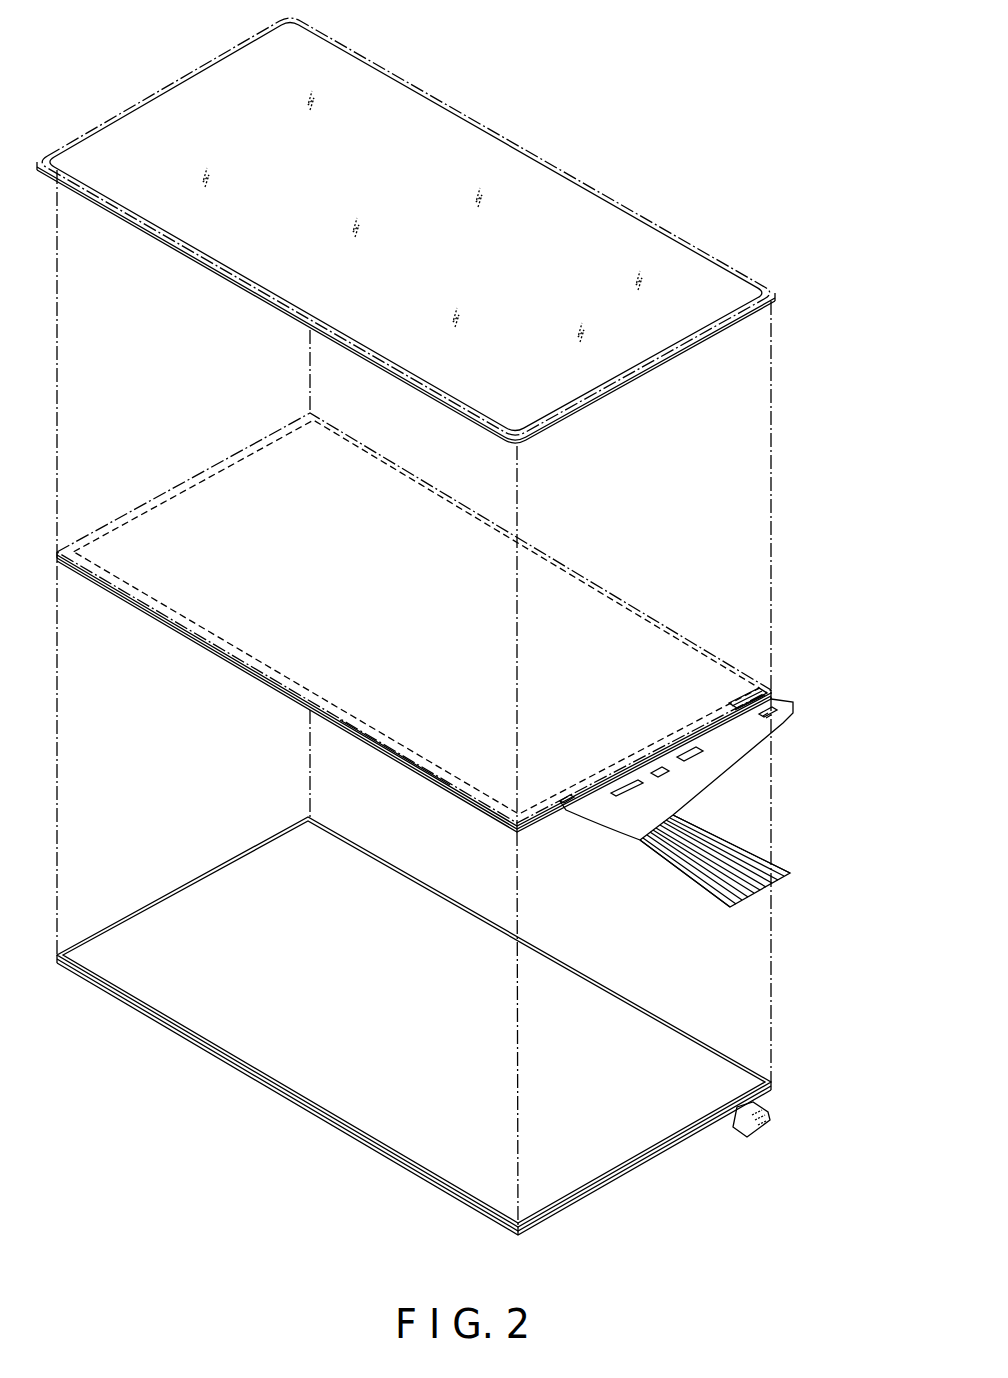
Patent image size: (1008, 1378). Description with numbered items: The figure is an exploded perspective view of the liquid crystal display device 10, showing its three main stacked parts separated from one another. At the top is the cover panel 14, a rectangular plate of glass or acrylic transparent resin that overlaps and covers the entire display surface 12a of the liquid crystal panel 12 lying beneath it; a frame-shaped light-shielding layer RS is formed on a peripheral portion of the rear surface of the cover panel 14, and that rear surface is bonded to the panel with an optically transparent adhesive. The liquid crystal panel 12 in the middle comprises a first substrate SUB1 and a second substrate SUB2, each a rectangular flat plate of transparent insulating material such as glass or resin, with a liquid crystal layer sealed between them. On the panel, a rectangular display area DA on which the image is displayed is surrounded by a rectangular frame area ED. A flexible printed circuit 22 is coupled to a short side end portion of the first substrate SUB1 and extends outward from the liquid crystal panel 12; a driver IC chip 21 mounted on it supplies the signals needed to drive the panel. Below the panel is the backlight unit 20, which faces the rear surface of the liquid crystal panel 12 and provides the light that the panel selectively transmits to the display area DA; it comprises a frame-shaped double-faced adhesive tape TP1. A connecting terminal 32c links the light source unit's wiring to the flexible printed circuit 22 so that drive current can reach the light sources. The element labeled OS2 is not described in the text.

The liquid crystal display device 10 is at (810, 449).
The liquid crystal display panel 12 is at (414, 662).
The display surface 12a is at (150, 608).
The cover panel 14 is at (470, 150).
The backlight unit 20 is at (447, 1032).
The driver IC chip 21 is at (676, 797).
The flexible printed circuit 22 is at (675, 803).
The connecting terminal 32c is at (765, 1120).
The light-shielding layer RS is at (127, 107).
The display area DA is at (222, 637).
The frame area ED is at (393, 762).
The double-faced adhesive tape TP1 is at (186, 883).
The first substrate SUB1 is at (550, 805).
The second substrate SUB2 is at (565, 801).
The second optical sheet OS2 is at (175, 1003).